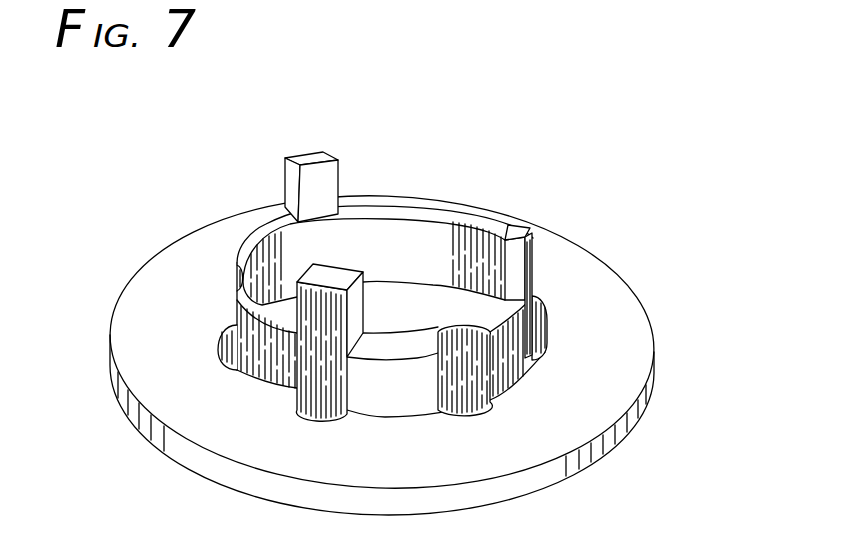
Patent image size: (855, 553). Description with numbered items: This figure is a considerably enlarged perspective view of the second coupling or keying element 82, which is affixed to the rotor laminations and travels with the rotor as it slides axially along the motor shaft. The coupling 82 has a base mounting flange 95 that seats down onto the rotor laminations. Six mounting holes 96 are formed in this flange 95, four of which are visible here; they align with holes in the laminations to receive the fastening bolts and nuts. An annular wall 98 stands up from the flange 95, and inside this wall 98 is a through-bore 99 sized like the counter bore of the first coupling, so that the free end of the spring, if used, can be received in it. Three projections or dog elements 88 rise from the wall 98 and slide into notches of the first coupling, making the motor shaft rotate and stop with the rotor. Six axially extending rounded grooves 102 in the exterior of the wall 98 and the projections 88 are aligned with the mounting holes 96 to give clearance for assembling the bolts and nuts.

The second coupling or keying element 82 is at (410, 312).
The projection or dog element 88 is at (330, 154).
The base mounting flange 95 is at (615, 345).
The mounting hole 96 is at (222, 330).
The annular wall 98 is at (480, 232).
The through-bore 99 is at (408, 234).
The rounded groove 102 is at (237, 278).